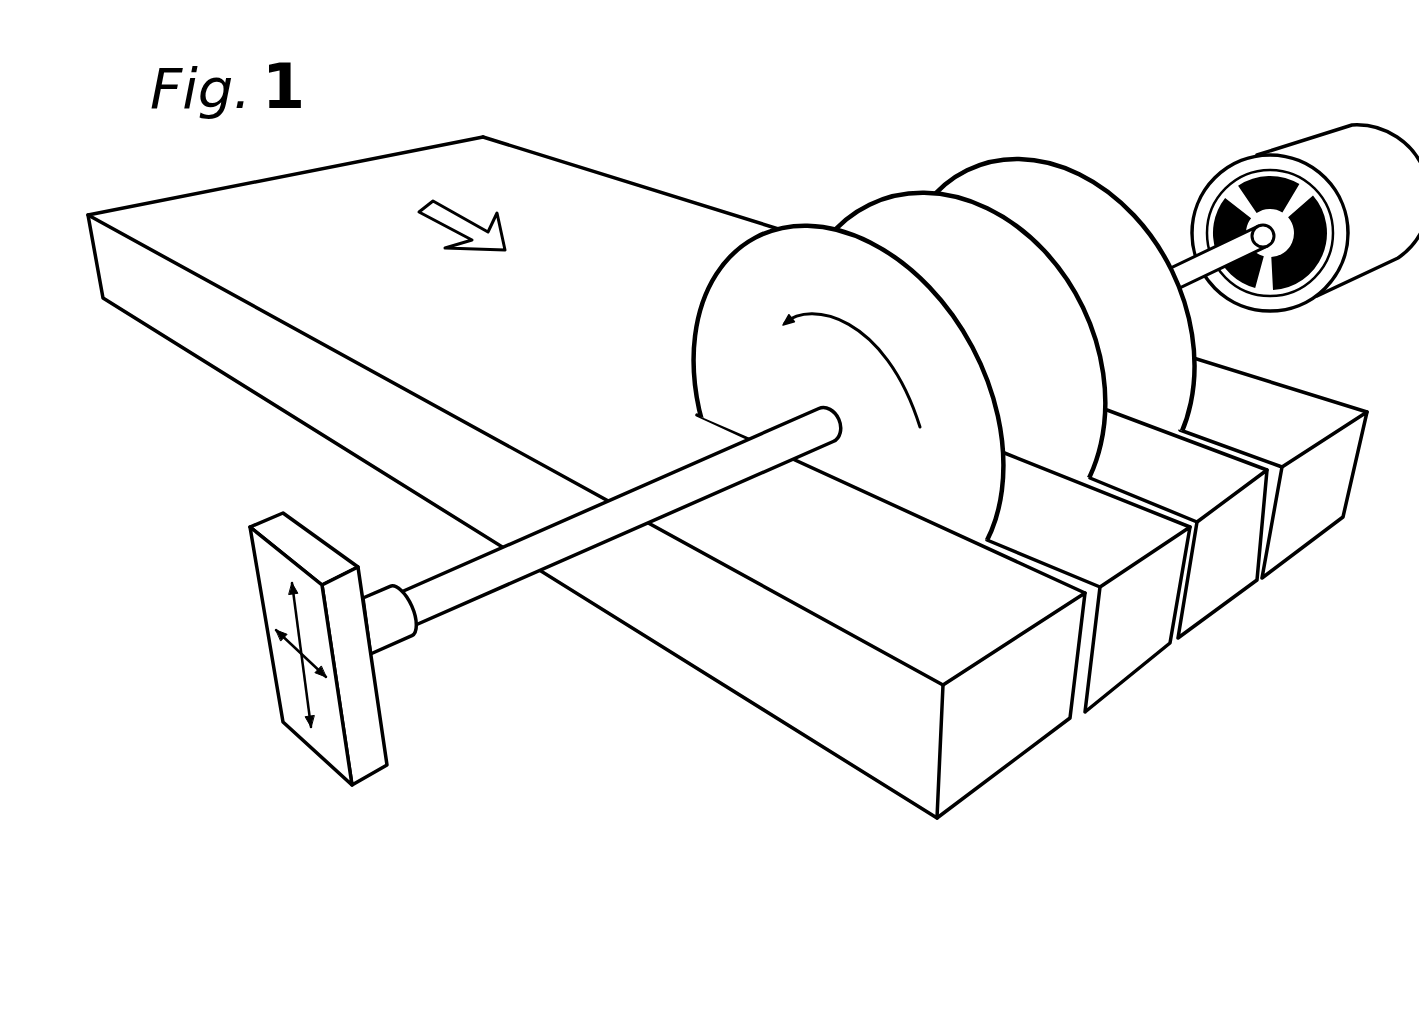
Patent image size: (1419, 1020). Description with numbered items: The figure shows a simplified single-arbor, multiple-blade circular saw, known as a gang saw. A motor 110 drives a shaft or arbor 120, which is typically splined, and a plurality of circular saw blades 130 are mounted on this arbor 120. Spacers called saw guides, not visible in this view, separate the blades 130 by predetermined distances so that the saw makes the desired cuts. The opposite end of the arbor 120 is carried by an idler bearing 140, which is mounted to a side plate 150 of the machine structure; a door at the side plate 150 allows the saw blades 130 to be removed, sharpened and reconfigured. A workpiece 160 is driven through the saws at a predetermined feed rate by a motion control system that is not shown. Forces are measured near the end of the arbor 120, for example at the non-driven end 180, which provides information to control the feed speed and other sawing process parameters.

The motor 110 is at (1246, 154).
The shaft or arbor 120 is at (1199, 285).
The circular saw blades 130 is at (993, 162).
The idler bearing 140 is at (410, 646).
The side plate 150 is at (265, 515).
The workpiece 160 is at (210, 241).
The non-driven end 180 is at (268, 707).